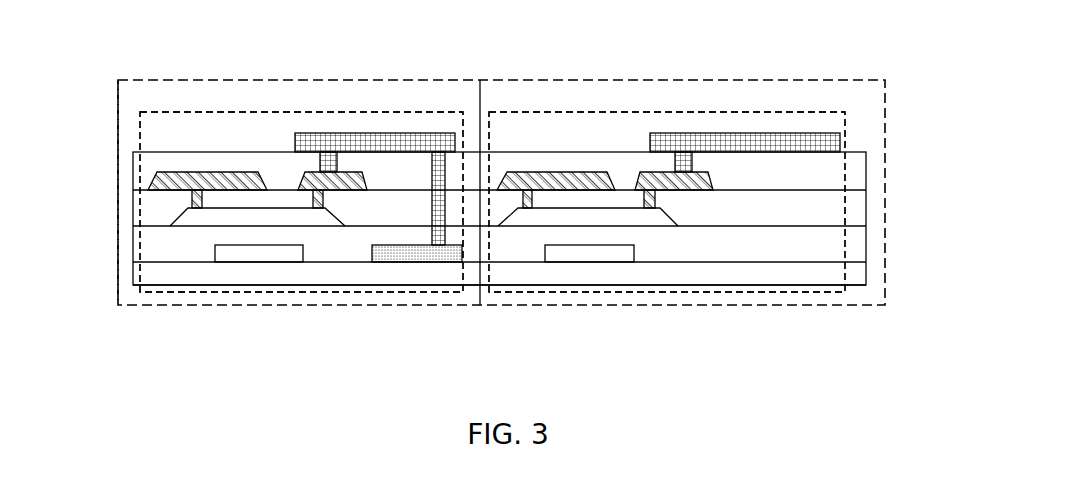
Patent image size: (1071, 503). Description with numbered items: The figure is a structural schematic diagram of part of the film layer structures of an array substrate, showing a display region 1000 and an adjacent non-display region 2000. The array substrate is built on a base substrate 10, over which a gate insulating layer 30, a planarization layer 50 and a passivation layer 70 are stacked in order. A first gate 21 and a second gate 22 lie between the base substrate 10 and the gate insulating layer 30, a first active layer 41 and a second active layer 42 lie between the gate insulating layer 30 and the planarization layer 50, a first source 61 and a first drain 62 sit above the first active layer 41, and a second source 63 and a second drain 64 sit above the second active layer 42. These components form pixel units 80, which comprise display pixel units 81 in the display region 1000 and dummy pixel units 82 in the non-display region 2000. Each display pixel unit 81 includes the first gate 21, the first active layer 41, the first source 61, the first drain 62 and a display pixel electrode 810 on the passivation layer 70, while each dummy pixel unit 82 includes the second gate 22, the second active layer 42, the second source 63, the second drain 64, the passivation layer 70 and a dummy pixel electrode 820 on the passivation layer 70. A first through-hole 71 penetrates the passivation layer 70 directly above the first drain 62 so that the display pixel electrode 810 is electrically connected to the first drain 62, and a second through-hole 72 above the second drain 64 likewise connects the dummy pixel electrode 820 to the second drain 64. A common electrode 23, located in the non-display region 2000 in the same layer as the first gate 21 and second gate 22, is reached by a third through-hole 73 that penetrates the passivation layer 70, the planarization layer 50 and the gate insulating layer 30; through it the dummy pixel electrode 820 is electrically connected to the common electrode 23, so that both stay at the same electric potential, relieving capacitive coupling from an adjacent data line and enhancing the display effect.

The display region 1000 is at (886, 80).
The non-display region 2000 is at (117, 80).
The pixel units 80 is at (518, 36).
The display pixel units 81 is at (492, 111).
The dummy pixel units 82 is at (464, 111).
The base substrate 10 is at (853, 280).
The gate insulating layer 30 is at (853, 250).
The planarization layer 50 is at (853, 217).
The passivation layer 70 is at (853, 181).
The first through-hole 71 is at (692, 159).
The second through-hole 72 is at (320, 160).
The third through-hole 73 is at (440, 233).
The display pixel electrode 810 is at (650, 137).
The dummy pixel electrode 820 is at (295, 137).
The first gate 21 is at (590, 262).
The second gate 22 is at (260, 262).
The common electrode 23 is at (398, 257).
The first active layer 41 is at (650, 226).
The second active layer 42 is at (303, 227).
The first source 61 is at (507, 187).
The first drain 62 is at (706, 186).
The second source 63 is at (175, 188).
The second drain 64 is at (332, 180).